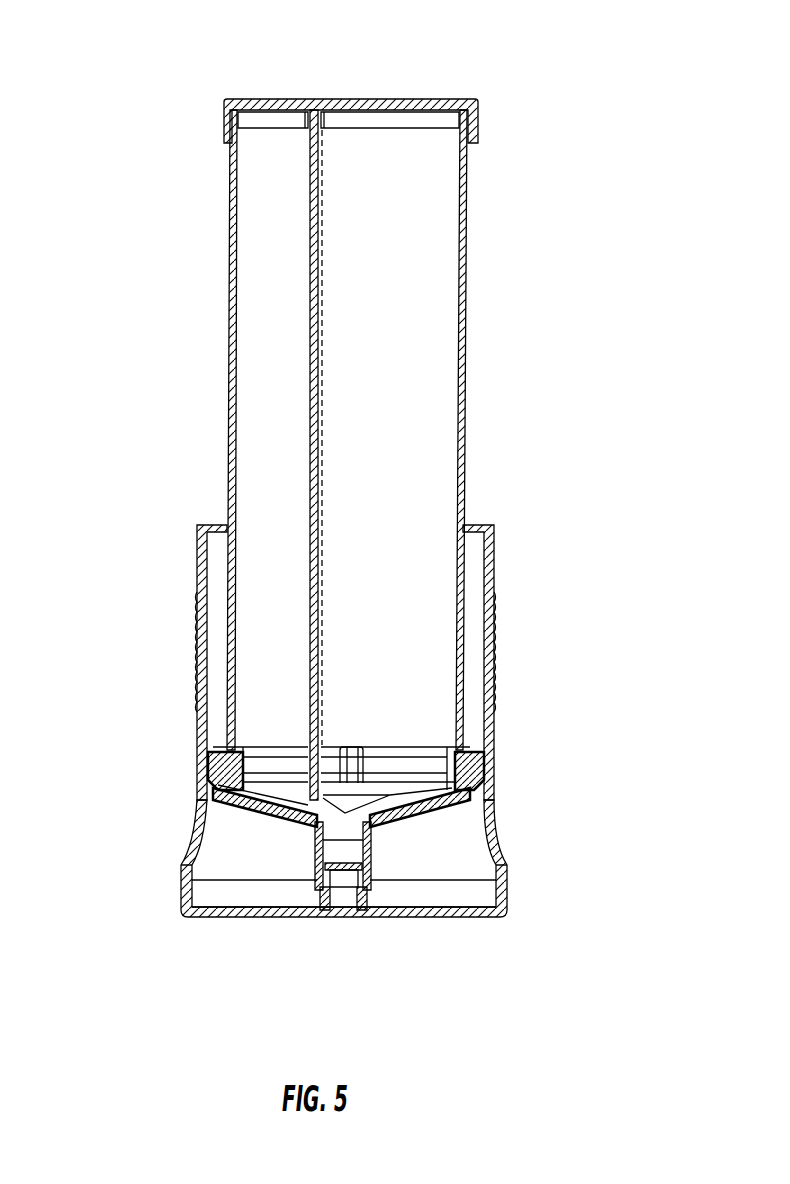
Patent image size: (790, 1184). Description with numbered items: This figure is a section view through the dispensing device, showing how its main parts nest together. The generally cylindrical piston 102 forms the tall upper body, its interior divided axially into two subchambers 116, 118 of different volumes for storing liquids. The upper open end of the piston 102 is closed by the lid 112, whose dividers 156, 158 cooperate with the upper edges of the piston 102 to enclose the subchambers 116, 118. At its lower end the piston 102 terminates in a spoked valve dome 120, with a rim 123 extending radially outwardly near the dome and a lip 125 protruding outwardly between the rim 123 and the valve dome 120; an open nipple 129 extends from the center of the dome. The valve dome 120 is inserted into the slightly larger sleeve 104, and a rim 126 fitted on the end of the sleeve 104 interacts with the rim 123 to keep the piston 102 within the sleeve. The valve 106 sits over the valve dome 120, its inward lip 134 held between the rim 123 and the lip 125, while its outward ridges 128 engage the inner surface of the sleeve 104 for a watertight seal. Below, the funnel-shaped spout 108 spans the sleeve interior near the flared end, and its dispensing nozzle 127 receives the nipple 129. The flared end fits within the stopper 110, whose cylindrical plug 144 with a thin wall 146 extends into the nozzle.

The piston 102 is at (470, 432).
The sleeve 104 is at (500, 833).
The valve 106 is at (195, 830).
The funnel-shaped spout 108 is at (300, 812).
The stopper 110 is at (455, 920).
The lid 112 is at (433, 100).
The subchamber 116 is at (415, 345).
The subchamber 118 is at (265, 352).
The spoked valve dome 120 is at (265, 812).
The rim 123 is at (470, 745).
The lip 125 is at (490, 772).
The rim 126 is at (487, 527).
The dispensing nozzle 127 is at (385, 862).
The ridges 128 is at (210, 770).
The open nipple 129 is at (500, 893).
The lip 134 is at (490, 760).
The cylindrical plug 144 is at (358, 892).
The thin wall 146 is at (335, 840).
The divider 156 is at (323, 118).
The divider 158 is at (287, 118).